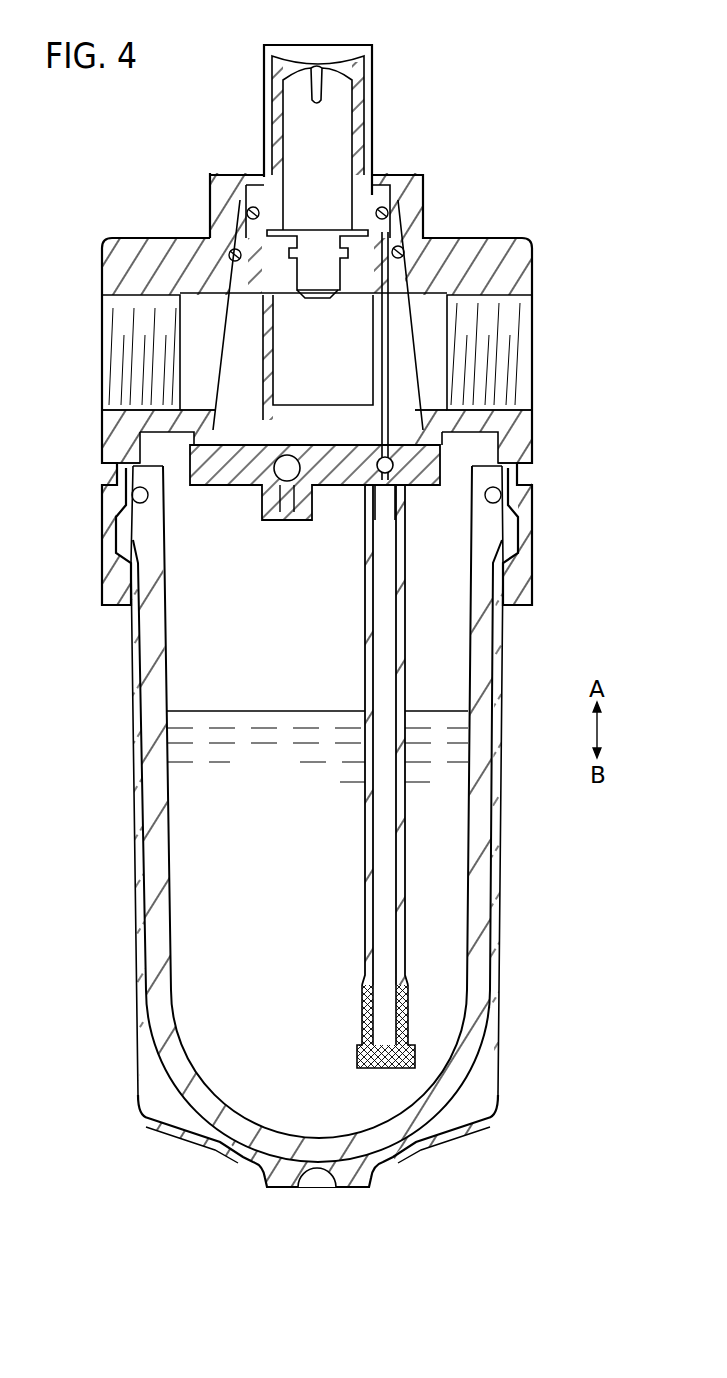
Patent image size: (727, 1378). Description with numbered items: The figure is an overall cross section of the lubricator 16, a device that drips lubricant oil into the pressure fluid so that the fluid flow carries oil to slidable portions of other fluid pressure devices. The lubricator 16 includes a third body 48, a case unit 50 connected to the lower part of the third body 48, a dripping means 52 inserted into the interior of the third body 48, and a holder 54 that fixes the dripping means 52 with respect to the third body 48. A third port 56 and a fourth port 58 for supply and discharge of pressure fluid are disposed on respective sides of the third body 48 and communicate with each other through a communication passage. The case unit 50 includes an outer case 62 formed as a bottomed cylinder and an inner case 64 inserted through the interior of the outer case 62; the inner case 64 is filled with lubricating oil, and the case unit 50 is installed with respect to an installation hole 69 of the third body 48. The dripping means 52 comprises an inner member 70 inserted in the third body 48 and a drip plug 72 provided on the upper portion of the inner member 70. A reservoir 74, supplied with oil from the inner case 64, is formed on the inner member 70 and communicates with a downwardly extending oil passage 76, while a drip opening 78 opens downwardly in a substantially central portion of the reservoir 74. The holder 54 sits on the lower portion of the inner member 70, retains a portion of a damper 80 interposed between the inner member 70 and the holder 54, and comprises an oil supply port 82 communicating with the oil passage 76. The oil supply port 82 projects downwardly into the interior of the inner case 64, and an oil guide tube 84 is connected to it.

The lubricator 16 is at (537, 160).
The third body 48 is at (108, 233).
The case unit 50 is at (137, 1097).
The dripping means 52 is at (380, 88).
The holder 54 is at (210, 492).
The third port 56 is at (124, 351).
The fourth port 58 is at (512, 342).
The outer case 62 is at (490, 1036).
The inner case 64 is at (478, 957).
The installation hole 69 is at (490, 445).
The inner member 70 is at (422, 282).
The drip plug 72 is at (340, 62).
The reservoir 74 is at (322, 258).
The oil passage 76 is at (383, 344).
The drip opening 78 is at (312, 284).
The damper 80 is at (275, 374).
The oil supply port 82 is at (388, 518).
The oil guide tube 84 is at (366, 868).